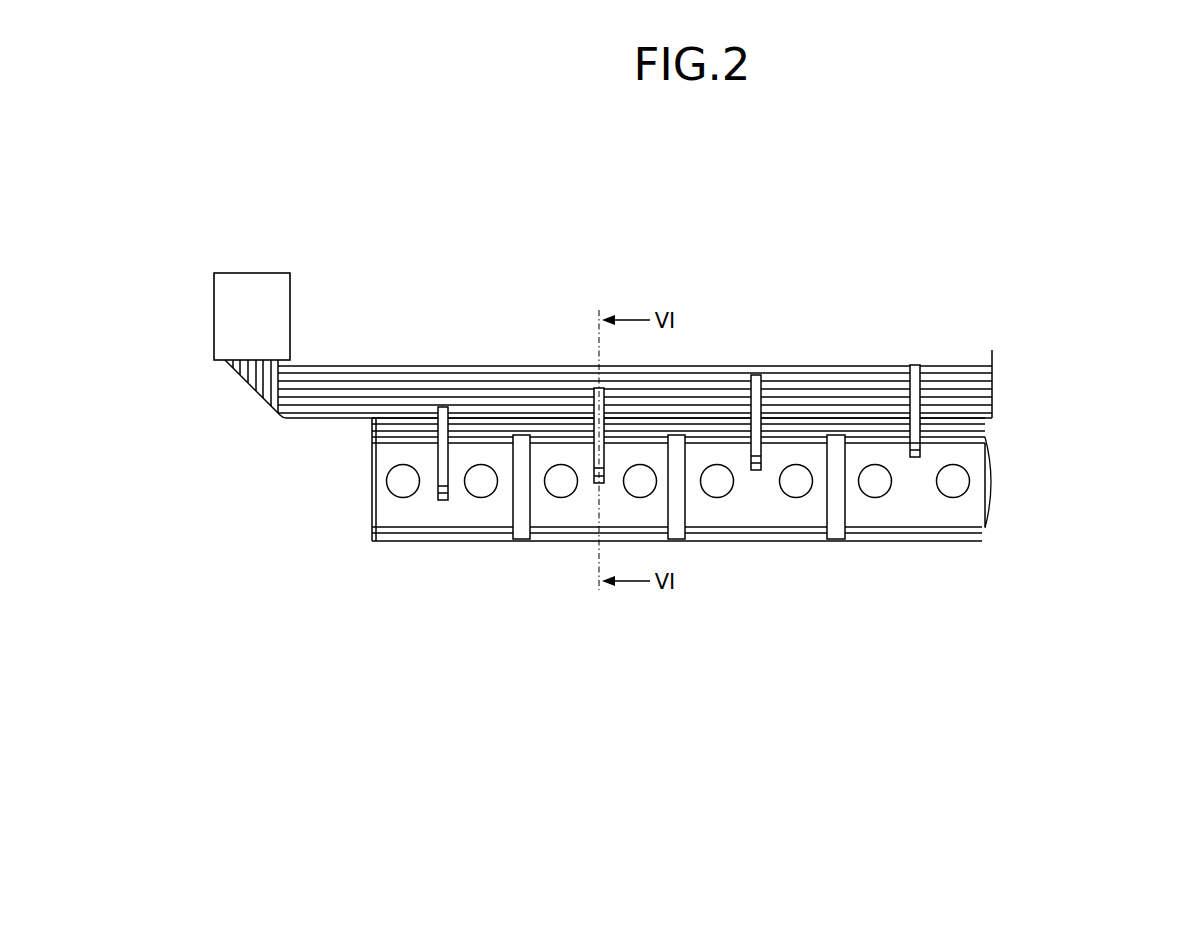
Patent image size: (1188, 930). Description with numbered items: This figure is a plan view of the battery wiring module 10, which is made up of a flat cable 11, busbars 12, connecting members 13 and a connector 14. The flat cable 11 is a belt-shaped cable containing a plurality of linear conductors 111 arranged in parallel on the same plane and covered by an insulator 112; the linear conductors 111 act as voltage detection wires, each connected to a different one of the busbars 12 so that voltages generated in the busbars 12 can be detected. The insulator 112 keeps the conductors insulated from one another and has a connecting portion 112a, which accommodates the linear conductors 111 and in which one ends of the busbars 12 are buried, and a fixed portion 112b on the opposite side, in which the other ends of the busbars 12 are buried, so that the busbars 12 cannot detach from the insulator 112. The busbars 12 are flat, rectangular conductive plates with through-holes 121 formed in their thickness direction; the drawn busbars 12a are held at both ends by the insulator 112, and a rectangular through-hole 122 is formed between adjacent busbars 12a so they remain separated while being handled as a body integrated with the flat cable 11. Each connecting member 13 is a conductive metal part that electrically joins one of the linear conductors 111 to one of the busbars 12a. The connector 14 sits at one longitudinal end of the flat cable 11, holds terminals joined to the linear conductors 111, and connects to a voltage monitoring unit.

The battery wiring module 10 is at (882, 238).
The flat cable 11 is at (954, 349).
The linear conductors 111 is at (352, 417).
The insulator 112 is at (1105, 380).
The connecting portion 112a is at (975, 404).
The fixed portion 112b is at (978, 567).
The busbars 12 is at (522, 660).
The busbar 12a is at (893, 515).
The through-holes 121 is at (475, 485).
The rectangular through-hole 122 is at (518, 488).
The connecting member 13 is at (915, 365).
The connector 14 is at (243, 283).